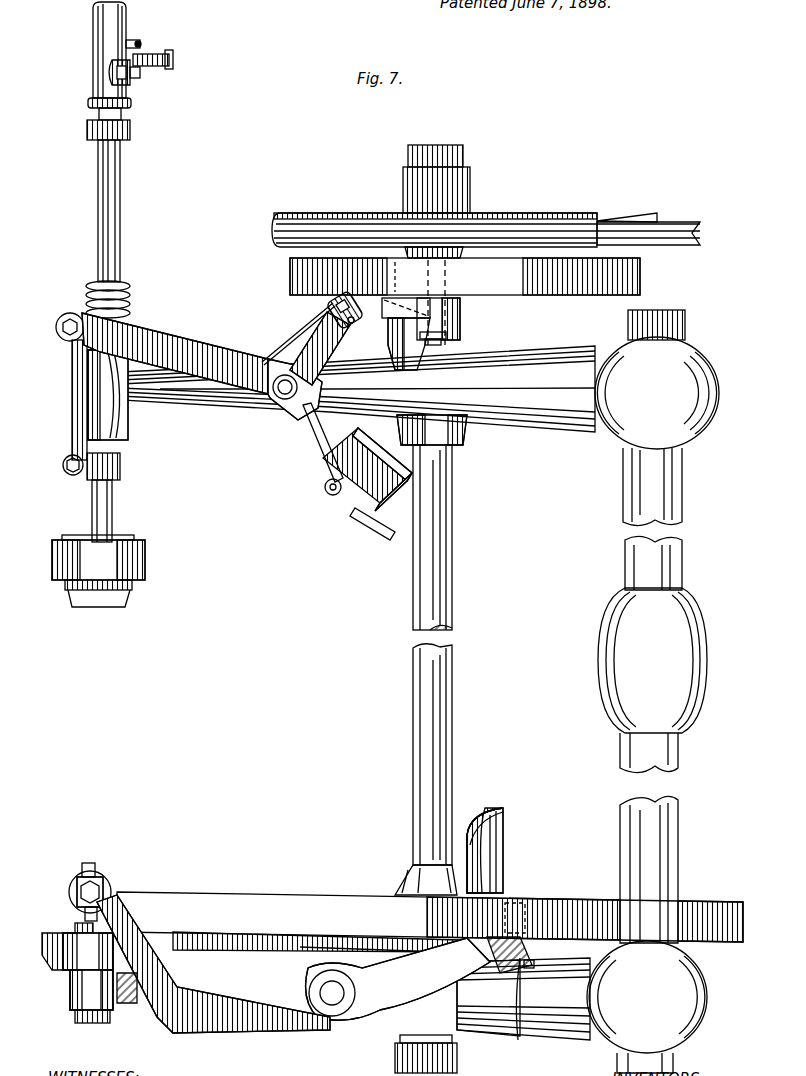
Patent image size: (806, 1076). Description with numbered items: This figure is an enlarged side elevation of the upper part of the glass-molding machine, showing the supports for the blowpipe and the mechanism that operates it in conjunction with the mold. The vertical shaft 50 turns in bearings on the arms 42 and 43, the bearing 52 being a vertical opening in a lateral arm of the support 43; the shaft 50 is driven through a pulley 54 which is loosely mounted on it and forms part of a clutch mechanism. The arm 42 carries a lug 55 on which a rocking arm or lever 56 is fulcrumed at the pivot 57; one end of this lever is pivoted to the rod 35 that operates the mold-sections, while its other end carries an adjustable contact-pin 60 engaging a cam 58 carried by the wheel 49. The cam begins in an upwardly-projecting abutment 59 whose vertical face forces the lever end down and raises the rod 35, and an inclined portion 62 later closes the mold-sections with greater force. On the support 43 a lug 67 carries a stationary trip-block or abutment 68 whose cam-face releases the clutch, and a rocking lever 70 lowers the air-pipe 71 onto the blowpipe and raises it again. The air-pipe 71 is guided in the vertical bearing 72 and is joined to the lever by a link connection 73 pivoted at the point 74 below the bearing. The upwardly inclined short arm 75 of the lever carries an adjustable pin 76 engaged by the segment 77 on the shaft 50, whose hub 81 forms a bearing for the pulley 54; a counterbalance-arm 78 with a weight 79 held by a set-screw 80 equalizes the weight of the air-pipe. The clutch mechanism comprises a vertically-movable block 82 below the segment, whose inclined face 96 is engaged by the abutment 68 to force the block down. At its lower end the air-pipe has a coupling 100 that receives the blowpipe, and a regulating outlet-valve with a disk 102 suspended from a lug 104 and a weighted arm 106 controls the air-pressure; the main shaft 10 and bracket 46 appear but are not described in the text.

The main shaft 10 is at (678, 866).
The rod 35 is at (98, 866).
The arm 42 is at (572, 991).
The arm 43 is at (419, 541).
The bracket 46 is at (56, 948).
The wheel 49 is at (742, 943).
The shaft 50 is at (450, 722).
The bearing 52 is at (466, 440).
The pulley 54 is at (354, 200).
The lug 55 is at (494, 1034).
The rocking arm or lever 56 is at (240, 1024).
The pivot 57 is at (332, 1000).
The cam 58 is at (324, 932).
The abutment 59 is at (493, 806).
The contact-pin 60 is at (520, 902).
The inclined portion 62 is at (470, 950).
The lug or support 67 is at (420, 362).
The trip-block or abutment 68 is at (396, 316).
The rocking lever 70 is at (218, 356).
The air-pipe 71 is at (118, 256).
The vertical bearing 72 is at (128, 426).
The link connection 73 is at (72, 408).
The point 74 is at (68, 476).
The short arm 75 is at (306, 351).
The adjustable pin 76 is at (330, 300).
The segment 77 is at (532, 296).
The counterbalance-arm 78 is at (303, 443).
The weight 79 is at (367, 484).
The set-screw 80 is at (328, 494).
The hub 81 is at (464, 252).
The block 82 is at (461, 331).
The inclined face 96 is at (455, 320).
The coupling 100 is at (98, 571).
The disk 102 is at (128, 86).
The lug 104 is at (128, 42).
The weighted arm 106 is at (140, 72).